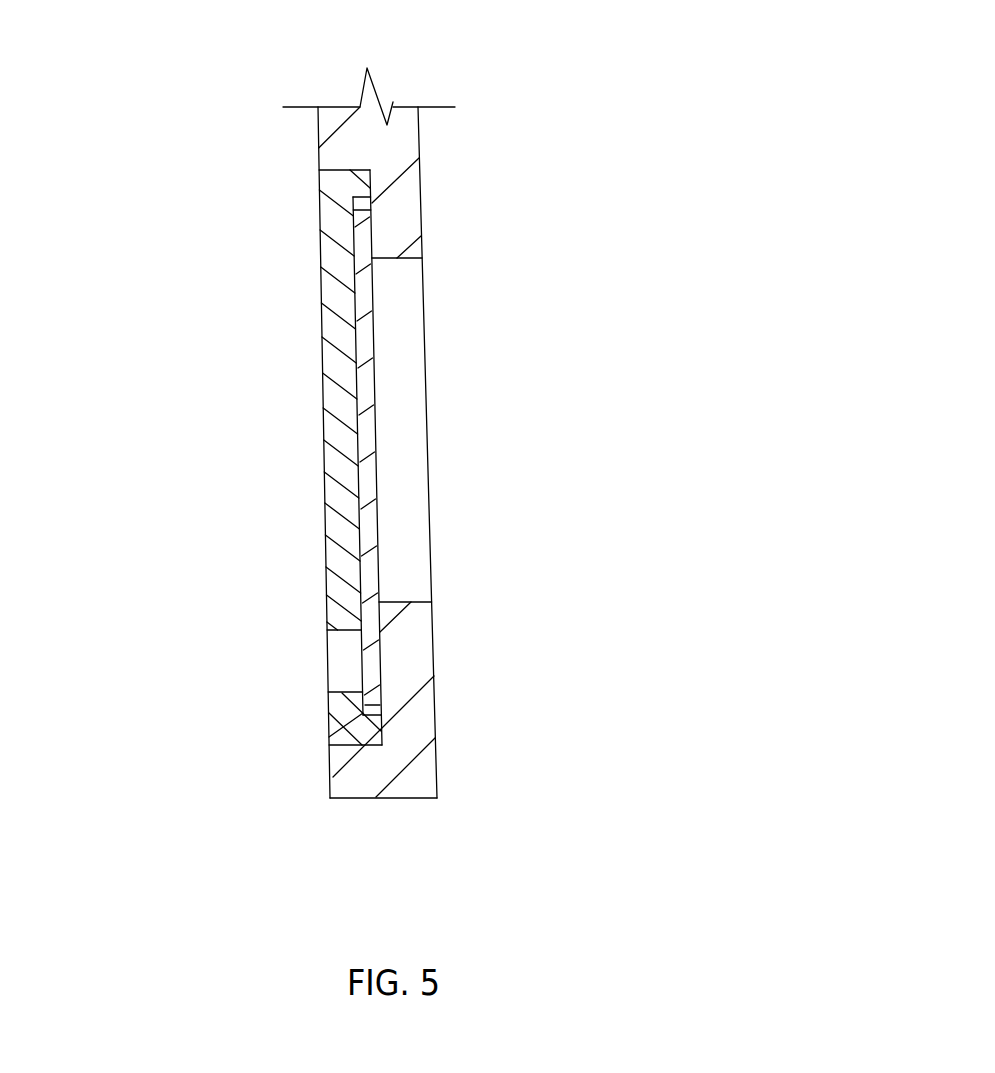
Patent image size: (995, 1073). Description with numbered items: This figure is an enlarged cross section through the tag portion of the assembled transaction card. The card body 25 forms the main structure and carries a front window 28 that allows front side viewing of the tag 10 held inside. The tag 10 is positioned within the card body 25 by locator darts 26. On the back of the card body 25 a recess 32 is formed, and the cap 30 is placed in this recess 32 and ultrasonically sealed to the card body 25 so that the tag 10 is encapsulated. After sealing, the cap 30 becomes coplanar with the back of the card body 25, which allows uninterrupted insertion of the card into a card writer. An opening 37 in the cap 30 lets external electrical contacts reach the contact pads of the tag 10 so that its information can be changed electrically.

The tag 10 is at (367, 342).
The card body 25 is at (435, 750).
The locator darts 26 is at (380, 711).
The front window 28 is at (412, 498).
The cap 30 is at (320, 216).
The recess 32 is at (370, 170).
The opening 37 is at (343, 665).